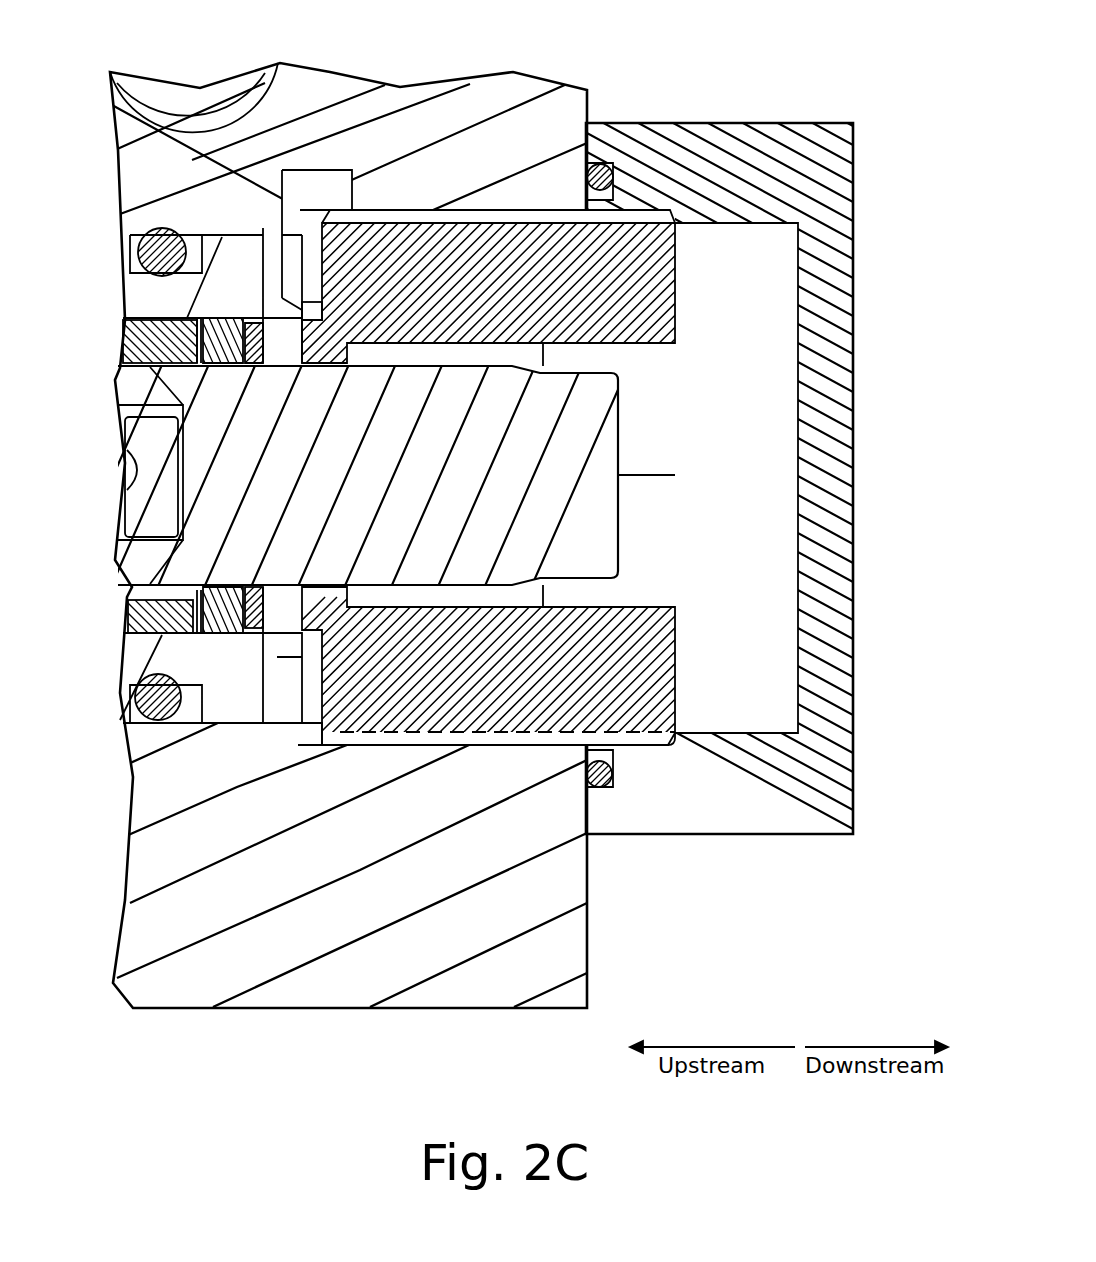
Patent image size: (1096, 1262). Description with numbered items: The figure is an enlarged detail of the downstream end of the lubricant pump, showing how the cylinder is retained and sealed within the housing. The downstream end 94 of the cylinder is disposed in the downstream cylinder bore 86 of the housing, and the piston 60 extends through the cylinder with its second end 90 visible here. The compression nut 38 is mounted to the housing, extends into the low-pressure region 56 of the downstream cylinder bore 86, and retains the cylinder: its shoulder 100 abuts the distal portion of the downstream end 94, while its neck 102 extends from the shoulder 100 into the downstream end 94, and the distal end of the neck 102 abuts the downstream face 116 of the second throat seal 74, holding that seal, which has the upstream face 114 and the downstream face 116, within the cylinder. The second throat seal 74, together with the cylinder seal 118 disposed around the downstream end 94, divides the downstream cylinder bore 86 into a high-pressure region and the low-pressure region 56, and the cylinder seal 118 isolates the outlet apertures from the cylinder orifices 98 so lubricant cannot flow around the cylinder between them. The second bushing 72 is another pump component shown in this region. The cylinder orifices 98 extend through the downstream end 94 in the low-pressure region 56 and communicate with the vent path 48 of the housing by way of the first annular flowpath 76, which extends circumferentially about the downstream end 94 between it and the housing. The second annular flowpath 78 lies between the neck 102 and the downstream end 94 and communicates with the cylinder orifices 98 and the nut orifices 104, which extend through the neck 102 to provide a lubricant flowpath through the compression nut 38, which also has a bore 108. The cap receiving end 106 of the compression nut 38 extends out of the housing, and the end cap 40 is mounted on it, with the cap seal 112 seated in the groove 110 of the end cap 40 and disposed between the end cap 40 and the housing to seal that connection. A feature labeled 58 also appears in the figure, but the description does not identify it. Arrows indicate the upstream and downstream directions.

The compression nut 38 is at (519, 745).
The end cap 40 is at (860, 728).
The vent path 48 is at (288, 128).
The low-pressure region 56 is at (137, 1062).
The bore 58 is at (314, 202).
The piston 60 is at (630, 520).
The second bushing 72 is at (130, 612).
The second throat seal 74 is at (233, 650).
The first annular flowpath 76 is at (282, 230).
The second annular flowpath 78 is at (307, 308).
The downstream cylinder bore 86 is at (212, 728).
The second end 90 is at (447, 478).
The downstream end 94 is at (150, 295).
The cylinder orifices 98 is at (280, 265).
The shoulder 100 is at (245, 588).
The neck 102 is at (247, 320).
The nut orifices 104 is at (280, 345).
The cap receiving end 106 is at (645, 255).
The bore 108 is at (645, 345).
The groove 110 is at (612, 770).
The cap seal 112 is at (598, 778).
The upstream face 114 is at (186, 632).
The downstream face 116 is at (272, 645).
The cylinder seal 118 is at (163, 240).